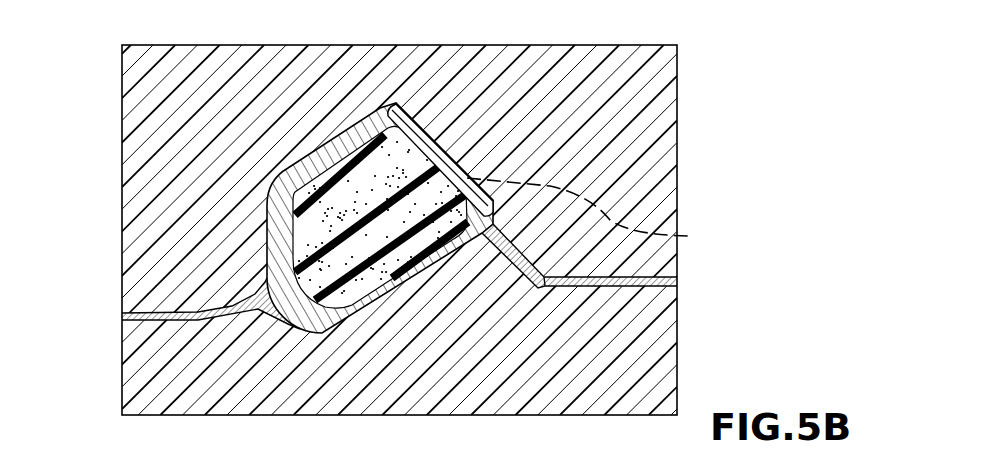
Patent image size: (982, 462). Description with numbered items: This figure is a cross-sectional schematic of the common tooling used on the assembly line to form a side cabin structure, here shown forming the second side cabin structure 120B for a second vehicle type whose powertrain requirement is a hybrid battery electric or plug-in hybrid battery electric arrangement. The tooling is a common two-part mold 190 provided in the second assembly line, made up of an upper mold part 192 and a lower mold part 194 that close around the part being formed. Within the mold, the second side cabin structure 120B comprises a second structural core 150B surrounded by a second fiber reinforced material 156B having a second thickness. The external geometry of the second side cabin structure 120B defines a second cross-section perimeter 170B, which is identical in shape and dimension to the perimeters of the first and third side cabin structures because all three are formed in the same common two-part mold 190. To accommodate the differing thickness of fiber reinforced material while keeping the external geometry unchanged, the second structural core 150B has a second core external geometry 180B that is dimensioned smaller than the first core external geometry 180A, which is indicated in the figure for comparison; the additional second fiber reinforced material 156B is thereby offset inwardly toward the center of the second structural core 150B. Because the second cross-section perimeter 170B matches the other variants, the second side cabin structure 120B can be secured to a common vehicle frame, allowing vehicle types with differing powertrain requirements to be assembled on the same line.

The common two-part mold 190 is at (122, 174).
The upper mold part 192 is at (677, 173).
The lower mold part 194 is at (677, 343).
The second fiber reinforced material 156B is at (320, 158).
The second cross-section perimeter 170B is at (287, 175).
The second structural core 150B is at (377, 140).
The second side cabin structure 120B is at (420, 106).
The second core external geometry 180B is at (447, 157).
The first core external geometry 180A is at (612, 213).